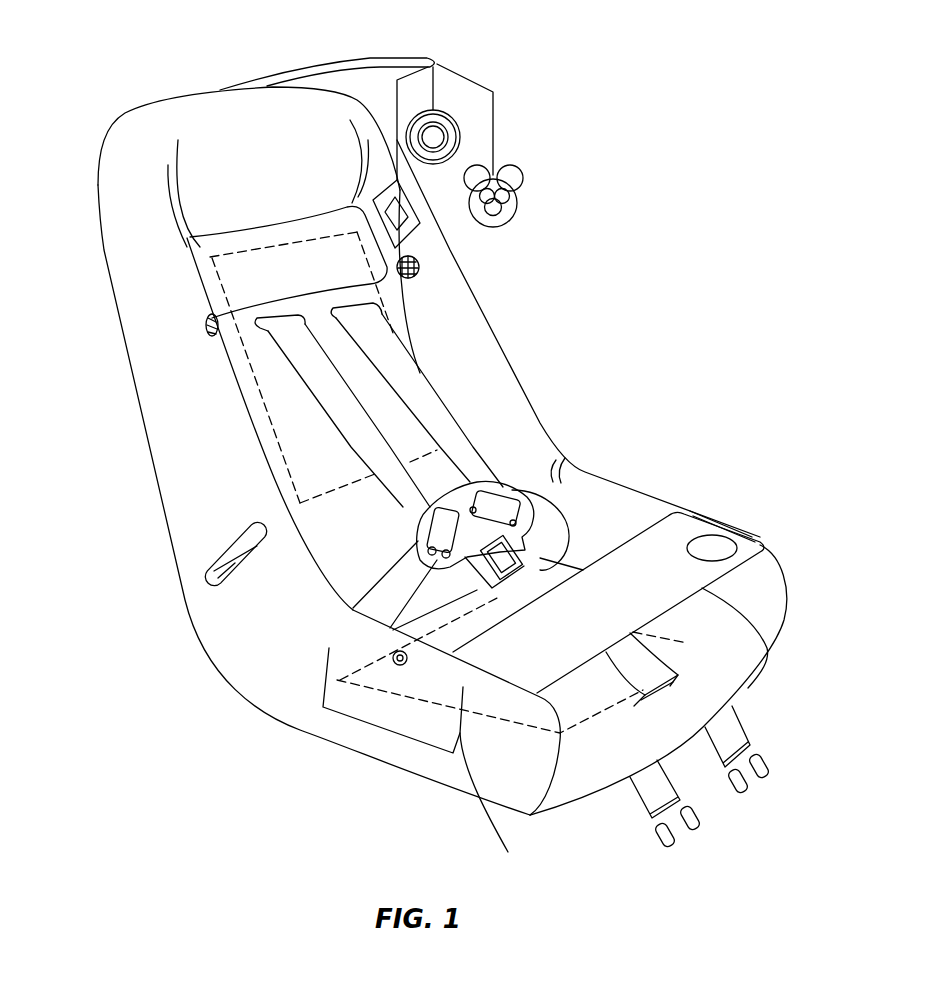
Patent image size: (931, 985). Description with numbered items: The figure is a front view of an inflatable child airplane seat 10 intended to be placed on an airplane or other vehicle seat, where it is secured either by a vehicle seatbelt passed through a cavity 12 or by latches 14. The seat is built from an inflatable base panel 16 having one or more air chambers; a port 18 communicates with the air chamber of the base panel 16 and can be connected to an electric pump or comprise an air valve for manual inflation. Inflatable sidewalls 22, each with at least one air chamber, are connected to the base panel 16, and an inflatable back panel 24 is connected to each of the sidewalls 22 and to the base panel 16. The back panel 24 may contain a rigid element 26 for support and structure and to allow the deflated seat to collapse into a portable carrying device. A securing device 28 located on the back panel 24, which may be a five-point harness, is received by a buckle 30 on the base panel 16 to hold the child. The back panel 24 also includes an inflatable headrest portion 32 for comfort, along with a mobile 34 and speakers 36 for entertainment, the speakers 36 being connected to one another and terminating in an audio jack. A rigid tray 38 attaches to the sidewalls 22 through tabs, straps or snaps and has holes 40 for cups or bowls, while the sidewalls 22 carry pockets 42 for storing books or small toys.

The inflatable child airplane seat 10 is at (690, 292).
The cavity 12 is at (207, 582).
The latches 14 is at (713, 730).
The base panel 16 is at (707, 641).
The port 18 is at (395, 665).
The sidewalls 22 is at (530, 442).
The back panel 24 is at (212, 250).
The rigid element 26 is at (283, 450).
The securing device 28 is at (427, 363).
The buckle 30 is at (548, 503).
The headrest portion 32 is at (273, 242).
The mobile 34 is at (418, 57).
The speakers 36 is at (205, 330).
The tray 38 is at (673, 530).
The holes 40 is at (723, 535).
The pockets 42 is at (508, 852).